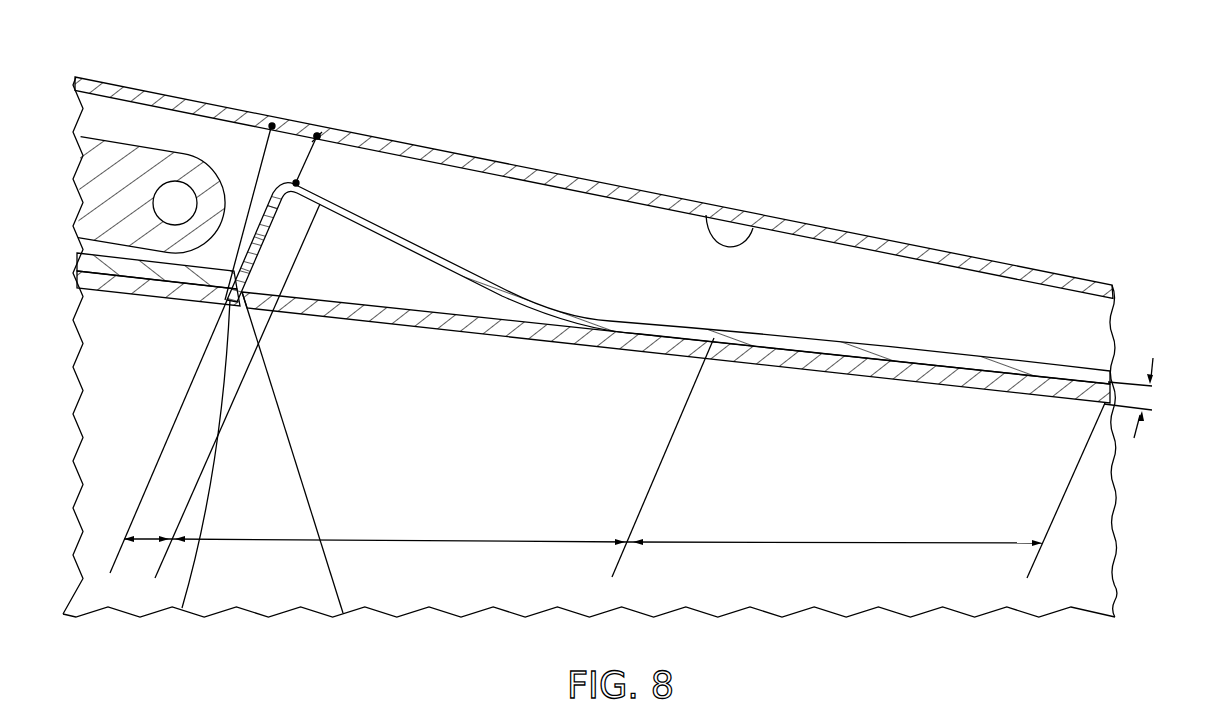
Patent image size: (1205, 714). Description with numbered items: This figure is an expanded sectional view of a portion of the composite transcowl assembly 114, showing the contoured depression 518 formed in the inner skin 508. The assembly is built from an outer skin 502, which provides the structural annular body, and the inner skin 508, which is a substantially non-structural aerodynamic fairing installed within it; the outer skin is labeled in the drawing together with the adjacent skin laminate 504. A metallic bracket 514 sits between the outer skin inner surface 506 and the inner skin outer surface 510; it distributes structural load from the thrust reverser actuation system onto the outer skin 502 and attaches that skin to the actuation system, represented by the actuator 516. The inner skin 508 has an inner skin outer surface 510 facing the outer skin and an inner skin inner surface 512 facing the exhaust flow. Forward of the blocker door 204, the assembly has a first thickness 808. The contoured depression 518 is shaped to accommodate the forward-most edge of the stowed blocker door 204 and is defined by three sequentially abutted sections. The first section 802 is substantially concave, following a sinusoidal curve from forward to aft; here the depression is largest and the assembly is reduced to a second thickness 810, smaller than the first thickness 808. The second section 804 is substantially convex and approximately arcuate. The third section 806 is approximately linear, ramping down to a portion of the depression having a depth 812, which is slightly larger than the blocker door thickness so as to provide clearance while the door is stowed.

The composite transcowl assembly 114 is at (555, 171).
The blocker door 204 is at (1008, 454).
The outer skin 502 is at (888, 223).
The skin laminate 504 is at (450, 153).
The outer skin inner surface 506 is at (706, 215).
The inner skin 508 is at (890, 358).
The inner skin outer surface 510 is at (842, 344).
The inner skin inner surface 512 is at (845, 364).
The metallic bracket 514 is at (100, 108).
The actuator 516 is at (125, 182).
The contoured depression 518 is at (338, 273).
The first section 802 is at (148, 541).
The second section 804 is at (442, 454).
The third section 806 is at (867, 490).
The first thickness 808 is at (257, 171).
The second thickness 810 is at (316, 134).
The depth 812 is at (1143, 385).